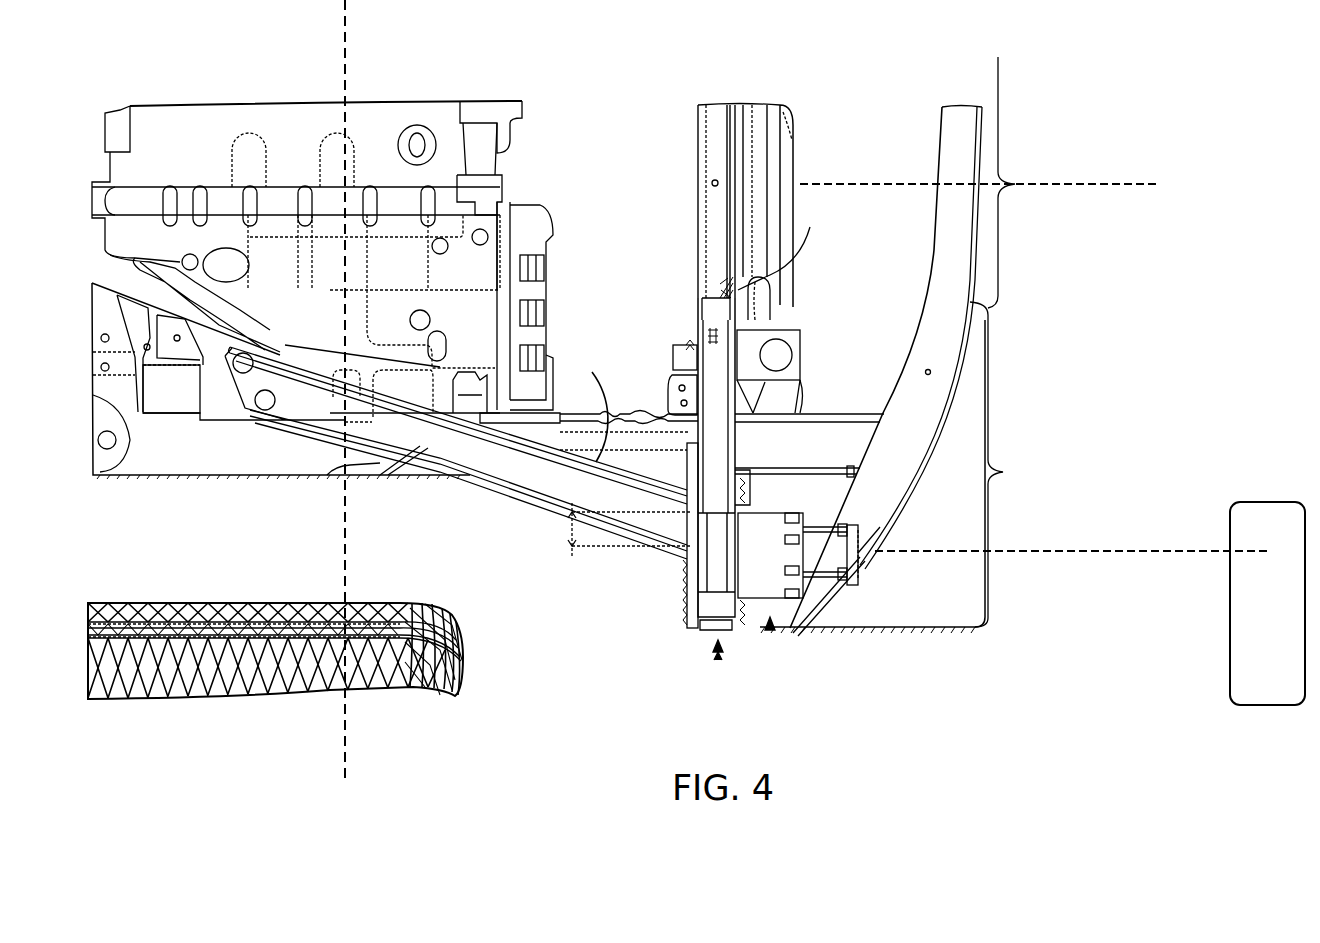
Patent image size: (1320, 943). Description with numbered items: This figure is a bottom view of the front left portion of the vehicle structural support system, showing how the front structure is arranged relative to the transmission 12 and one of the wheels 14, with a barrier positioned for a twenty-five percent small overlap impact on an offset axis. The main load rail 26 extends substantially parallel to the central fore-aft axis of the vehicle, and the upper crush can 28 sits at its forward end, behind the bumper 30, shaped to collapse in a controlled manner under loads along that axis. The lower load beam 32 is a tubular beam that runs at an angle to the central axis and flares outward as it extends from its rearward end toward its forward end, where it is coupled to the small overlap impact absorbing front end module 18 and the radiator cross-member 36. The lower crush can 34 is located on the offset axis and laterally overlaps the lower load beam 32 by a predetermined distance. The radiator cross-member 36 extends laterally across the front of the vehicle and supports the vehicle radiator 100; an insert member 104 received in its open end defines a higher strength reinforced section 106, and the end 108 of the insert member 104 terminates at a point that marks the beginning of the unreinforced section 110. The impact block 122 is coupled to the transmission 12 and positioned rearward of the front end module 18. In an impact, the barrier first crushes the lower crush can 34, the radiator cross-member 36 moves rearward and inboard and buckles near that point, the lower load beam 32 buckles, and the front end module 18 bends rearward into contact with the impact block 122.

The transmission 12 is at (540, 232).
The wheels 14 is at (258, 690).
The small overlap impact absorbing front end module (FEM) 18 is at (716, 662).
The main load rail 26 is at (630, 428).
The upper crush can 28 is at (848, 420).
The bumper 30 is at (945, 128).
The lower load beam 32 is at (503, 478).
The lower crush can 34 is at (770, 635).
The radiator cross-member 36 is at (698, 148).
The vehicle radiator 100 is at (783, 162).
The insert member 104 is at (693, 352).
The reinforced section 106 is at (1005, 464).
The end of the insert member 108 is at (706, 298).
The unreinforced section 110 is at (1018, 182).
The impact block 122 is at (528, 418).